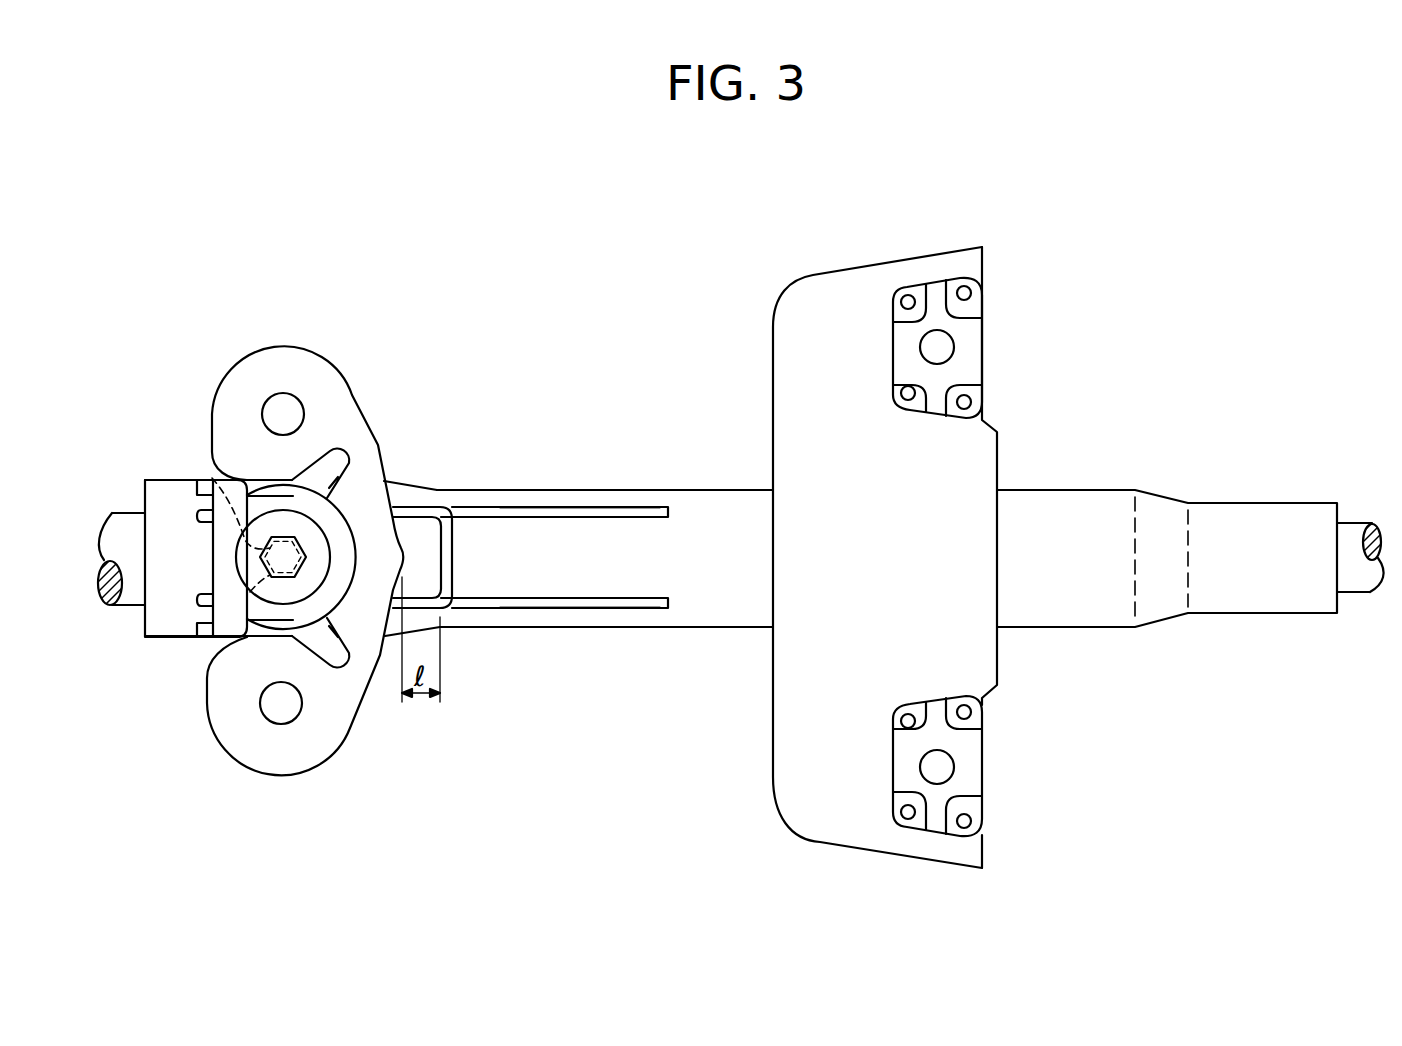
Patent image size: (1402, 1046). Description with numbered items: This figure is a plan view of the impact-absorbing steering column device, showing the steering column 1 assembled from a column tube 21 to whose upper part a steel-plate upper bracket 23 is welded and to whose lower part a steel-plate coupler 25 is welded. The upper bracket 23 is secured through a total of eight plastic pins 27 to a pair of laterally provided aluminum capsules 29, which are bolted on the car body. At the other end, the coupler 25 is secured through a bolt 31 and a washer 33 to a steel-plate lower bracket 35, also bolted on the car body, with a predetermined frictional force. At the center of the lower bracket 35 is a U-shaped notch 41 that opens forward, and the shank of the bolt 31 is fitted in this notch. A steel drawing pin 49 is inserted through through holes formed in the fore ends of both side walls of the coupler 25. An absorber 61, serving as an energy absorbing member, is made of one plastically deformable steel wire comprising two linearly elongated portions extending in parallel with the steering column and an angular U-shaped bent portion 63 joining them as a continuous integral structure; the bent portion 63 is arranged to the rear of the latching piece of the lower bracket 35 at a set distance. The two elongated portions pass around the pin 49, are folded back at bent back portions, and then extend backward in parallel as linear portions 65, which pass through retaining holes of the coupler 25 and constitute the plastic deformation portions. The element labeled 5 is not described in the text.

The steering column 1 is at (693, 352).
The steering shaft 5 is at (127, 530).
The column tube 21 is at (635, 622).
The upper bracket 23 is at (828, 285).
The coupler 25 is at (228, 627).
The plastic pins 27 is at (968, 290).
The capsules 29 is at (973, 351).
The bolt 31 is at (320, 553).
The washer 33 is at (272, 553).
The lower bracket 35 is at (250, 357).
The U-shaped notch 41 is at (222, 478).
The drawing pin 49 is at (213, 567).
The absorber 61 is at (538, 499).
The angular U-shaped bent portion 63 is at (452, 557).
The linear portions 65 is at (615, 512).